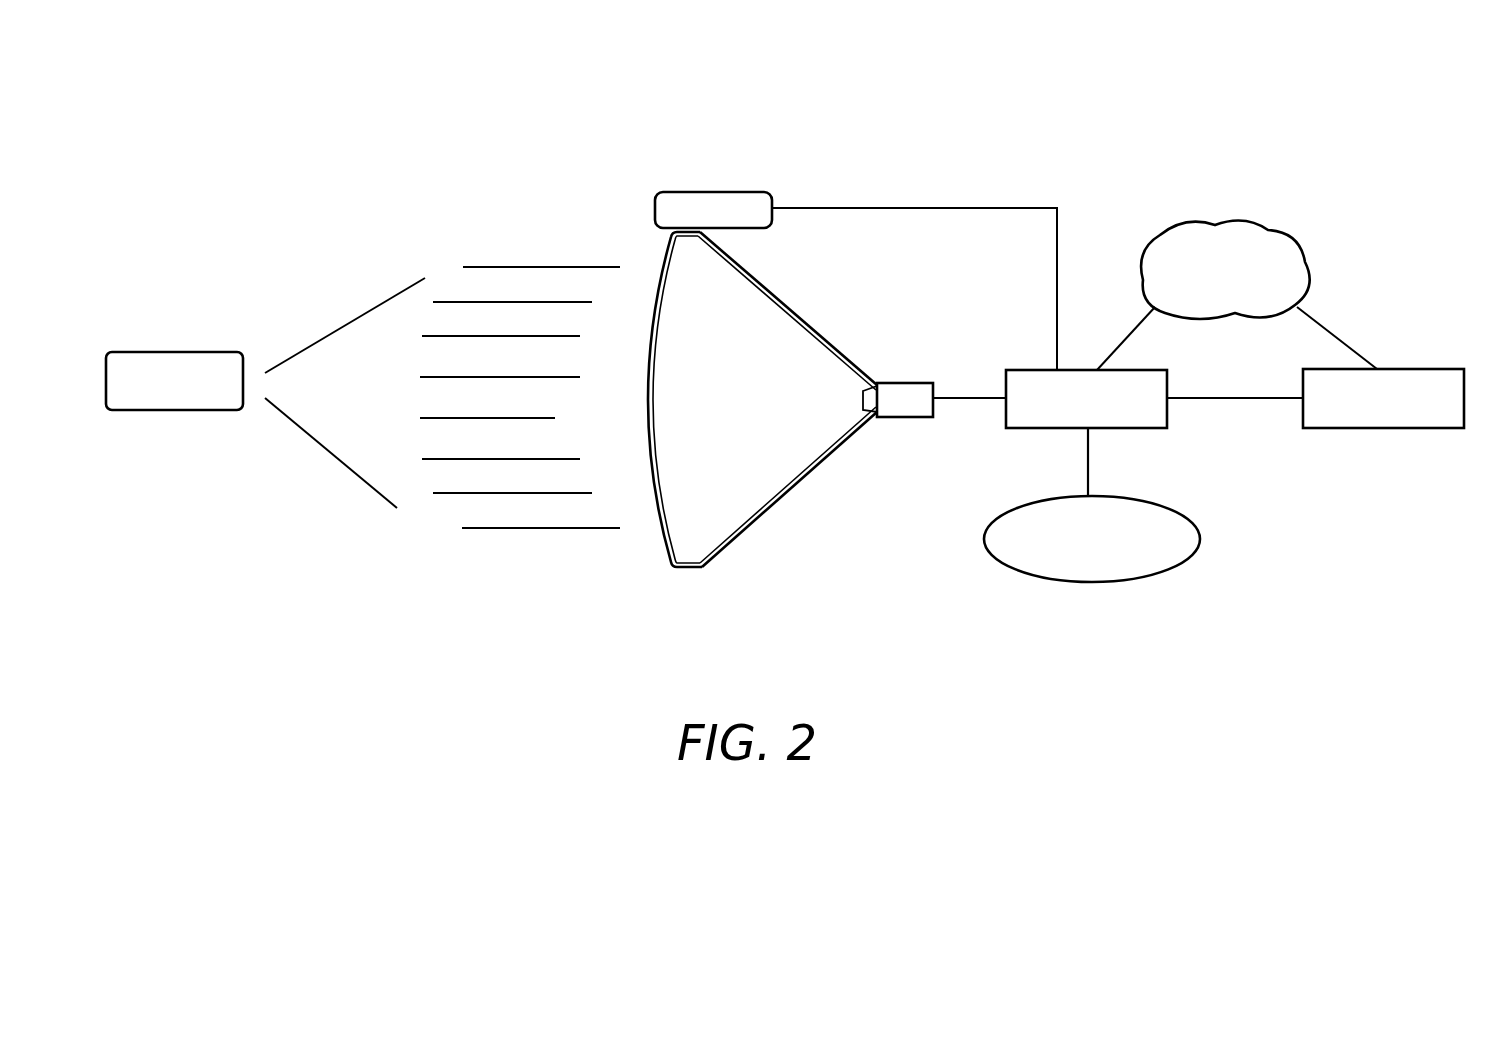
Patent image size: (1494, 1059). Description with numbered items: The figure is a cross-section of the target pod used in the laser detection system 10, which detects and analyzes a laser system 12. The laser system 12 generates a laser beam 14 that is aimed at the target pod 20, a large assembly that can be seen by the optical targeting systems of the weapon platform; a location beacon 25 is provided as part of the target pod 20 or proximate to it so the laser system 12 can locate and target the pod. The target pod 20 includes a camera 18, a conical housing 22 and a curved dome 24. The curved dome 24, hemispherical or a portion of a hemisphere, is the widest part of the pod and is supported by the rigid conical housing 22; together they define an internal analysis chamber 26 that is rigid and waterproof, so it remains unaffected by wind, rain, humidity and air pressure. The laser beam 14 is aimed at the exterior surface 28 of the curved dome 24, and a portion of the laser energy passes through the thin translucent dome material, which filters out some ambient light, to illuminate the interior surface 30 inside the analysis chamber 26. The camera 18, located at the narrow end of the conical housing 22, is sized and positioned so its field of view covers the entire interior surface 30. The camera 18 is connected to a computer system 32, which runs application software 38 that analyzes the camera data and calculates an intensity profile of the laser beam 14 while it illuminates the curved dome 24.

The laser detection system 10 is at (838, 153).
The laser system 12 is at (178, 352).
The laser beam 14 is at (498, 267).
The camera 18 is at (900, 382).
The target pod 20 is at (793, 298).
The conical housing 22 is at (820, 467).
The curved dome 24 is at (658, 273).
The location beacon 25 is at (712, 192).
The internal analysis chamber 26 is at (823, 362).
The exterior surface 28 is at (697, 437).
The interior surface 30 is at (653, 428).
The computer system 32 is at (1143, 428).
The application software 38 is at (1157, 575).